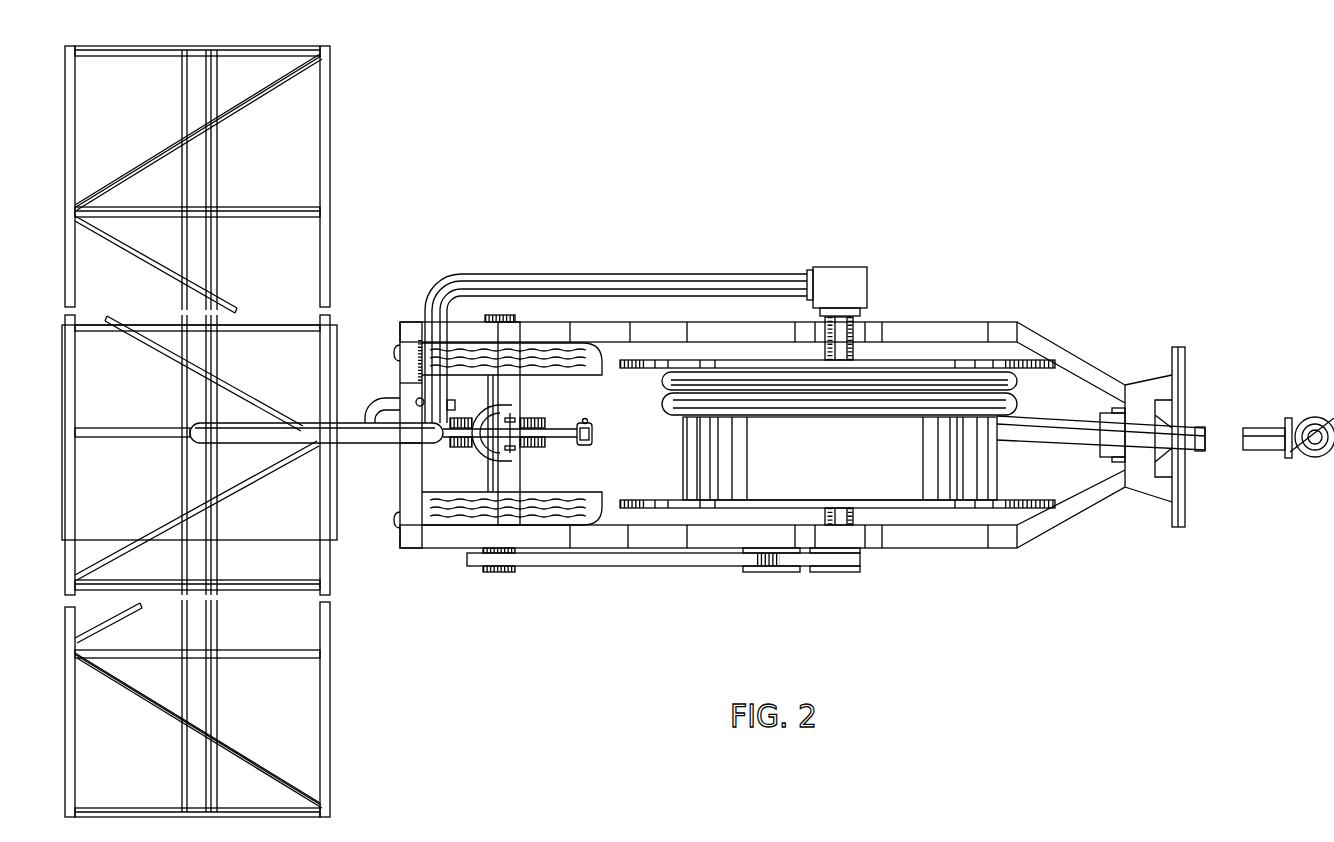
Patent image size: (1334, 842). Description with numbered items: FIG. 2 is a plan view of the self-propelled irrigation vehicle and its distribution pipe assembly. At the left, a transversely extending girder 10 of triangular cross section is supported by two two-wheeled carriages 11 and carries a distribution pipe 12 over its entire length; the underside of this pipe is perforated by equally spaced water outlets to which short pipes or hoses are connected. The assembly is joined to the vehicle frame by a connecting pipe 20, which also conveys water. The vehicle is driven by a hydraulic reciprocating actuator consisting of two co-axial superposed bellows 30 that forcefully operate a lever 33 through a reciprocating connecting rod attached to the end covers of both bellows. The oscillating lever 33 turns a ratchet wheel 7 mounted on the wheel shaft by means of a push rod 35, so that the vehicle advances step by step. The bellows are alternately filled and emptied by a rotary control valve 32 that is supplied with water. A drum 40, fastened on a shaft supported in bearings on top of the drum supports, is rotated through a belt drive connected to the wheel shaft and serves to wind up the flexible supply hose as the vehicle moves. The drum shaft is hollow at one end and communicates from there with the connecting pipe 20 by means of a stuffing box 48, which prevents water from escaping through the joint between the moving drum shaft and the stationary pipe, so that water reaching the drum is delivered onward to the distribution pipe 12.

The girder 10 is at (323, 104).
The two-wheeled carriage 11 is at (310, 527).
The distribution pipe 12 is at (198, 178).
The connecting pipe 20 is at (357, 437).
The rotary control valve 32 is at (410, 400).
The ratchet wheel 7 is at (455, 447).
The bellows 30 is at (522, 455).
The lever 33 is at (580, 432).
The push rod 35 is at (596, 436).
The drum 40 is at (697, 478).
The stuffing box 48 is at (847, 272).